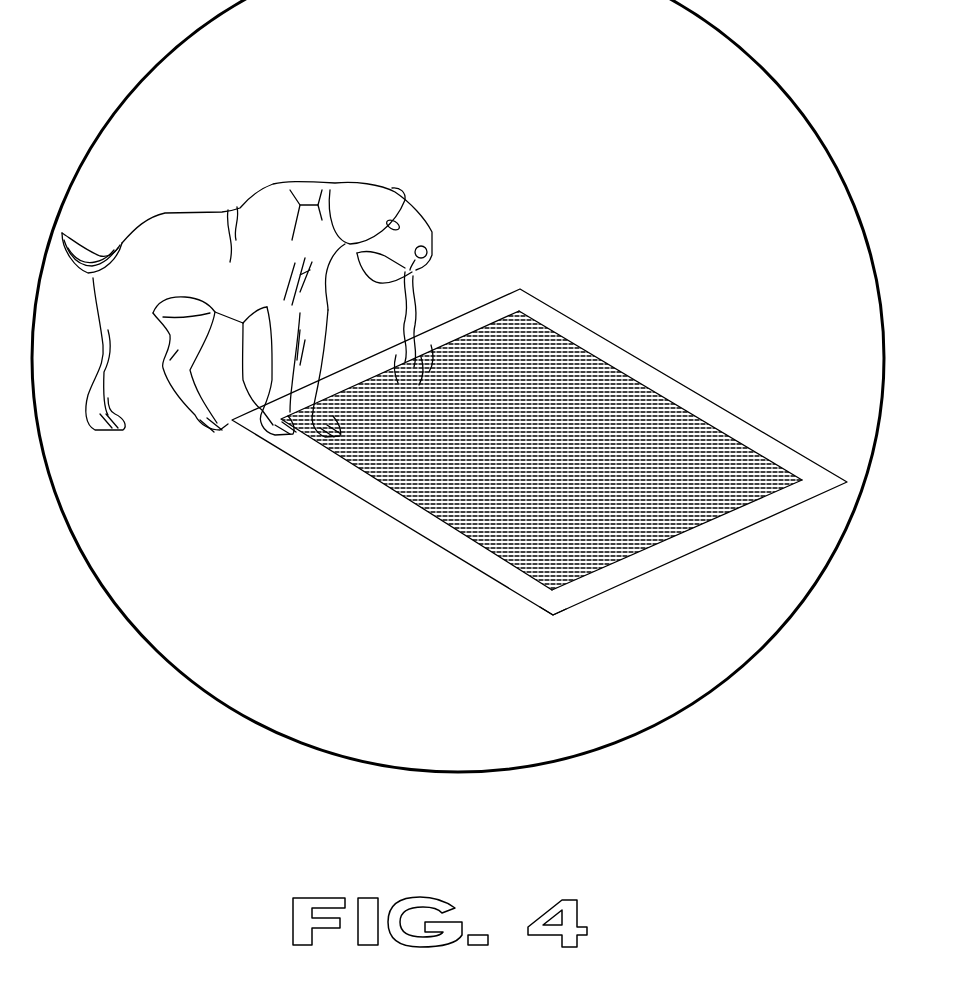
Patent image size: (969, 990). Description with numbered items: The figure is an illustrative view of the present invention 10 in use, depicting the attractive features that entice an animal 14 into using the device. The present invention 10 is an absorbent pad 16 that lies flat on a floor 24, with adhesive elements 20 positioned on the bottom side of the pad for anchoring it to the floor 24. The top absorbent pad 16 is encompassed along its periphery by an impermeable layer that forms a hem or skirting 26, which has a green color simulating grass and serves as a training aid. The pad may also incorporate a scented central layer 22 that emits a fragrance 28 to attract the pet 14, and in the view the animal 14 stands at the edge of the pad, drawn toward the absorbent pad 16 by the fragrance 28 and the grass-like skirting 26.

The present invention 10 is at (627, 307).
The animal 14 is at (247, 309).
The absorbent pad 16 is at (645, 503).
The adhesive elements 20 is at (550, 620).
The scented central layer 22 is at (701, 415).
The floor 24 is at (182, 493).
The hem or skirting 26 is at (333, 470).
The fragrance 28 is at (422, 302).